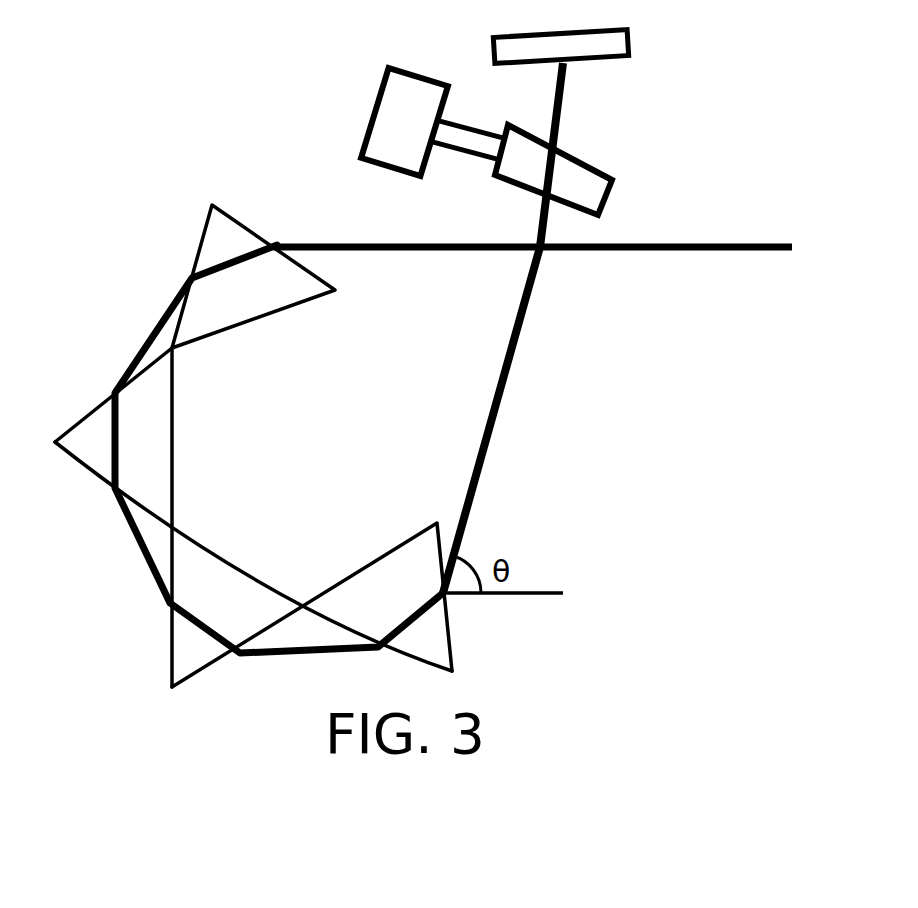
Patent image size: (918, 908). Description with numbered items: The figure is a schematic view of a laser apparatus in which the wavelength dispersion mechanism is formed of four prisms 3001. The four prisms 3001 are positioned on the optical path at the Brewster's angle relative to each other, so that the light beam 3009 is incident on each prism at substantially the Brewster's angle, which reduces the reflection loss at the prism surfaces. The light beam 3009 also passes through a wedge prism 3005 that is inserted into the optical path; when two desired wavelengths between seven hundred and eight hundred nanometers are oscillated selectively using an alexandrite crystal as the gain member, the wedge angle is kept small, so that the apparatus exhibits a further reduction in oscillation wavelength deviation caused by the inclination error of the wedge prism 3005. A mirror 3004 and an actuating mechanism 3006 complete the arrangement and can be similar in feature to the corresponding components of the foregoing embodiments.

The prism 3001 is at (222, 237).
The mirror 3004 is at (607, 52).
The wedge prism 3005 is at (610, 192).
The actuating mechanism 3006 is at (397, 137).
The light beam 3009 is at (505, 401).